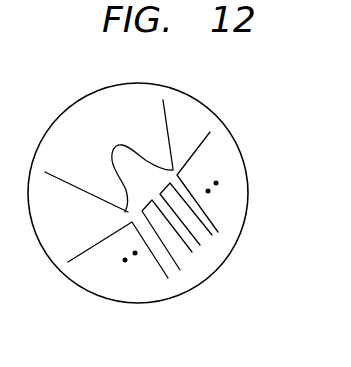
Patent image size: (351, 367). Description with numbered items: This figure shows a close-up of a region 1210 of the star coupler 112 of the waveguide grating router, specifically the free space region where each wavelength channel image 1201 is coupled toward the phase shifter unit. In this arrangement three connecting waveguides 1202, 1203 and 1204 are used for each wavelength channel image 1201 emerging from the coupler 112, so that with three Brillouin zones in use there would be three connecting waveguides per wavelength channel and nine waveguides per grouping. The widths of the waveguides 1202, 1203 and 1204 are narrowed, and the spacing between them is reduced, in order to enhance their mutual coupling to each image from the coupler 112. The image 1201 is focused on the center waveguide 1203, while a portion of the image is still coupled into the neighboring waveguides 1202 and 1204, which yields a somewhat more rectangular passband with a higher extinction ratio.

The coupler 112 is at (88, 230).
The wavelength channel image 1201 is at (113, 150).
The connecting waveguide 1202 is at (218, 232).
The connecting waveguide 1203 is at (193, 250).
The connecting waveguide 1204 is at (173, 272).
The region 1210 is at (217, 122).